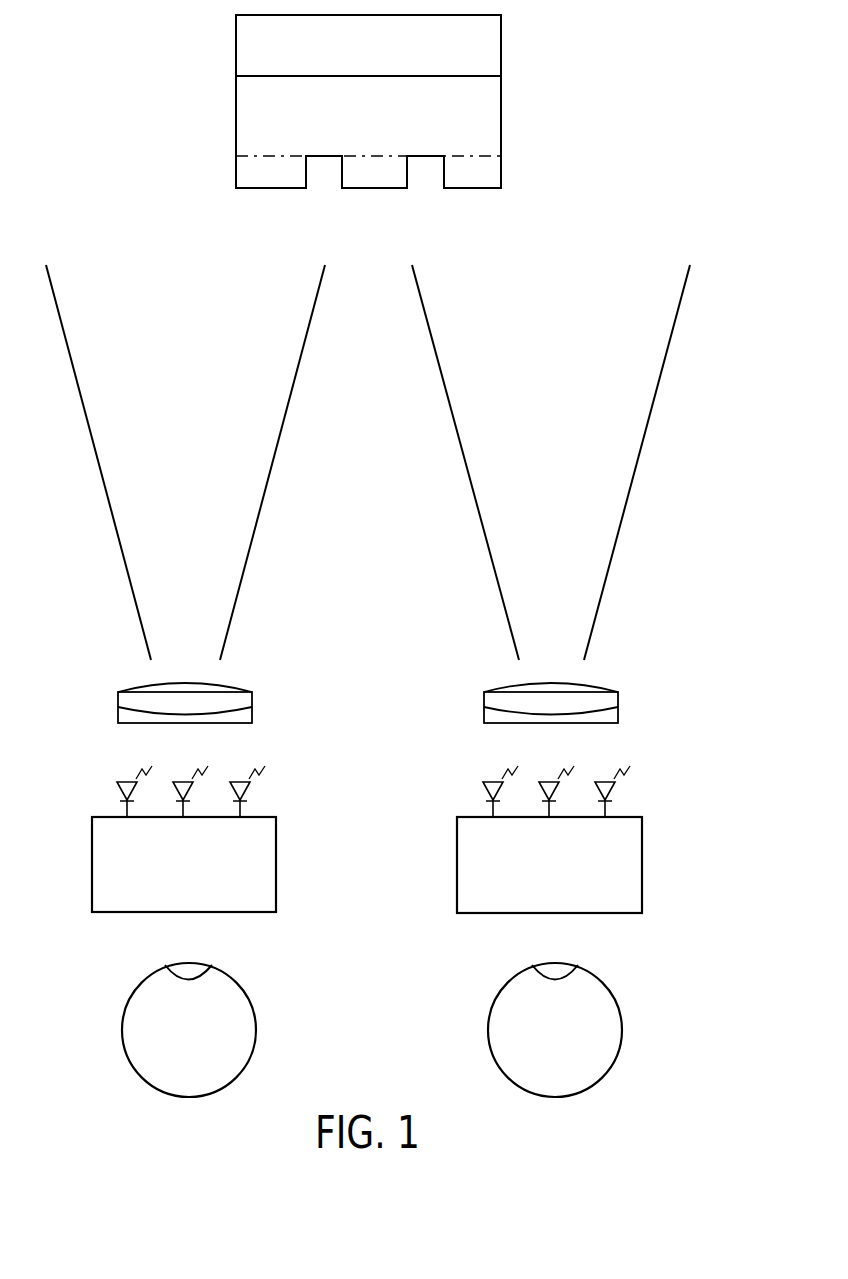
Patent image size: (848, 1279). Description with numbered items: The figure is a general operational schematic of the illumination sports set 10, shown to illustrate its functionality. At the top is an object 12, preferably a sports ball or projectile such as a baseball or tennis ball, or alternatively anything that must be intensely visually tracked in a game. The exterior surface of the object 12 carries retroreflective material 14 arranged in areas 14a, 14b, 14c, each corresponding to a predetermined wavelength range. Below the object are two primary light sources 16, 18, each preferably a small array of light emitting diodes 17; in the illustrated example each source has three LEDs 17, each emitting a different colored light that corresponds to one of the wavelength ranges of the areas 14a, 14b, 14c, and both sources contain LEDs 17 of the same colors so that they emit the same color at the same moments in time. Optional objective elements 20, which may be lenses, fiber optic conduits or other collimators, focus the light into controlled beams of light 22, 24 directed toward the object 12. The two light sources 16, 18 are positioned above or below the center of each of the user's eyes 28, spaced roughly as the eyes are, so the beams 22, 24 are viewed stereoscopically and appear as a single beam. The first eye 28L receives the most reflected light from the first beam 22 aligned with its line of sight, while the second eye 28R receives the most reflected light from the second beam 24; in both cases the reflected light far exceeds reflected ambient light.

The illumination sports set 10 is at (678, 151).
The object 12 is at (257, 52).
The retroreflective material 14 is at (257, 125).
The area of retroreflective material 14a is at (263, 182).
The area of retroreflective material 14b is at (370, 182).
The area of retroreflective material 14c is at (467, 182).
The primary light source 16 is at (276, 837).
The light emitting diodes 17 is at (125, 778).
The primary light source 18 is at (521, 859).
The objective element 20 is at (242, 690).
The first beam of light 22 is at (245, 455).
The second beam of light 24 is at (515, 455).
The eyes 28 is at (370, 1030).
The first eye 28L is at (122, 1020).
The second eye 28R is at (622, 1027).